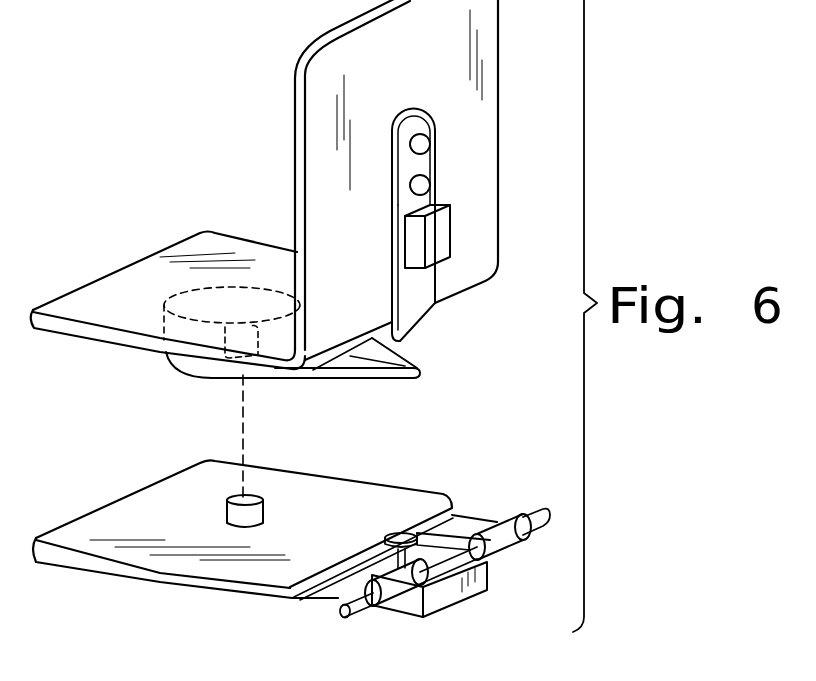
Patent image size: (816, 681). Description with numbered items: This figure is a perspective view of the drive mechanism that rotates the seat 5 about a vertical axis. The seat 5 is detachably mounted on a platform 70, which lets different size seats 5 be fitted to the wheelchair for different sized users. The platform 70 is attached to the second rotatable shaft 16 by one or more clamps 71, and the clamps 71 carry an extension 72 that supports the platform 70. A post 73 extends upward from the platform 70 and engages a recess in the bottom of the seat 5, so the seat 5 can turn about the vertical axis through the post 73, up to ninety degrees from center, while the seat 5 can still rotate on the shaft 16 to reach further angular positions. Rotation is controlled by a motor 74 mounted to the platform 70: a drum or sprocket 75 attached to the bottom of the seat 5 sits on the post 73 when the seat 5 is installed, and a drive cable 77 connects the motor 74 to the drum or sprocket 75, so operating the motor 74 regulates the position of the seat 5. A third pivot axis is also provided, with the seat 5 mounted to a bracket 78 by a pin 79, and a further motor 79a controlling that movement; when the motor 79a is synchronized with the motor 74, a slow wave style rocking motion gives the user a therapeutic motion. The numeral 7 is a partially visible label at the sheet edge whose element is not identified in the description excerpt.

The seat 5 is at (425, 75).
The pin 79 is at (422, 145).
The motor 79a is at (440, 238).
The bracket 78 is at (418, 318).
The drive cable 77 is at (420, 372).
The drum or sprocket 75 is at (187, 363).
The platform 70 is at (102, 523).
The post 73 is at (263, 512).
The extension 72 is at (467, 528).
The second rotatable shaft 16 is at (532, 512).
The clamp 71 is at (507, 560).
The motor 74 is at (442, 602).
The housing 7 is at (686, 673).